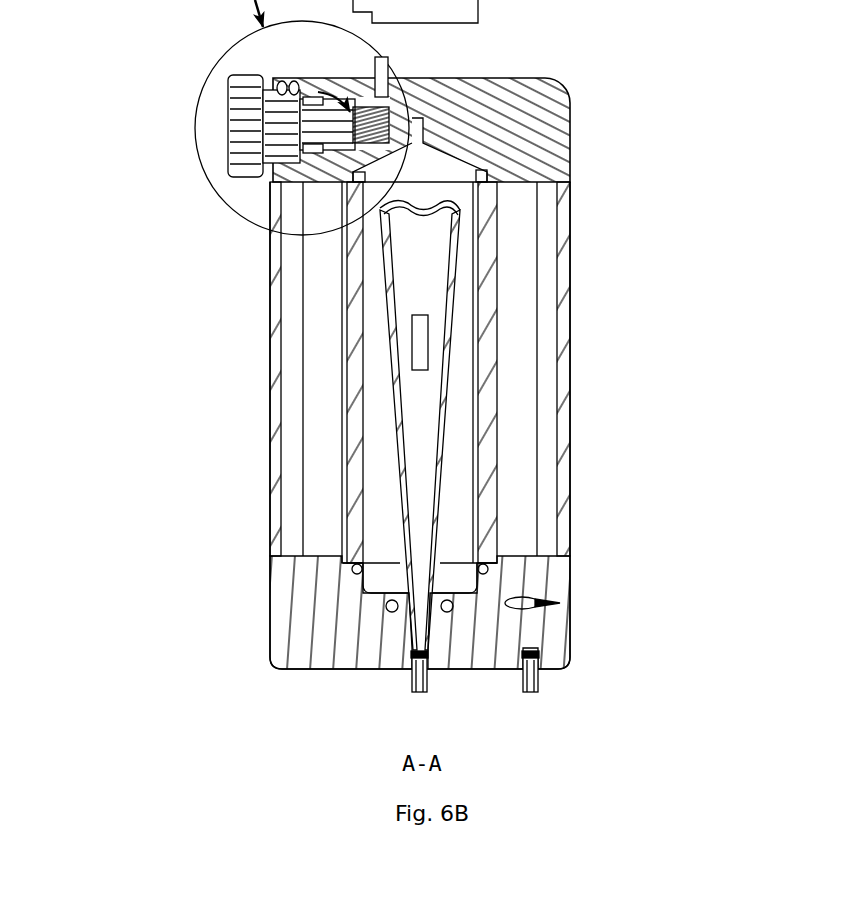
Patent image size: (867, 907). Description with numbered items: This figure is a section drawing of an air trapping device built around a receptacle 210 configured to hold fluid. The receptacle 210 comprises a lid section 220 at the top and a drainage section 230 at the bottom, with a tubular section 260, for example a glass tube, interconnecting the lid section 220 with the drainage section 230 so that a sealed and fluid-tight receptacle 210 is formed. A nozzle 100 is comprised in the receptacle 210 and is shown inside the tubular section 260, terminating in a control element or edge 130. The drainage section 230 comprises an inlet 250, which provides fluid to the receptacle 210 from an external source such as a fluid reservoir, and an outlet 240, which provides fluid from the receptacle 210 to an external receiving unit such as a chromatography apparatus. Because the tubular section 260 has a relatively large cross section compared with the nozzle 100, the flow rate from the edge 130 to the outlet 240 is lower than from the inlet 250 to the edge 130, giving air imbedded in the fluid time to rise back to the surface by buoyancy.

The nozzle 100 is at (423, 289).
The control element 130 is at (392, 210).
The receptacle 210 is at (460, 341).
The lid section 220 is at (560, 147).
The drainage section 230 is at (277, 653).
The outlet 240 is at (542, 687).
The inlet 250 is at (417, 688).
The tubular section 260 is at (277, 313).